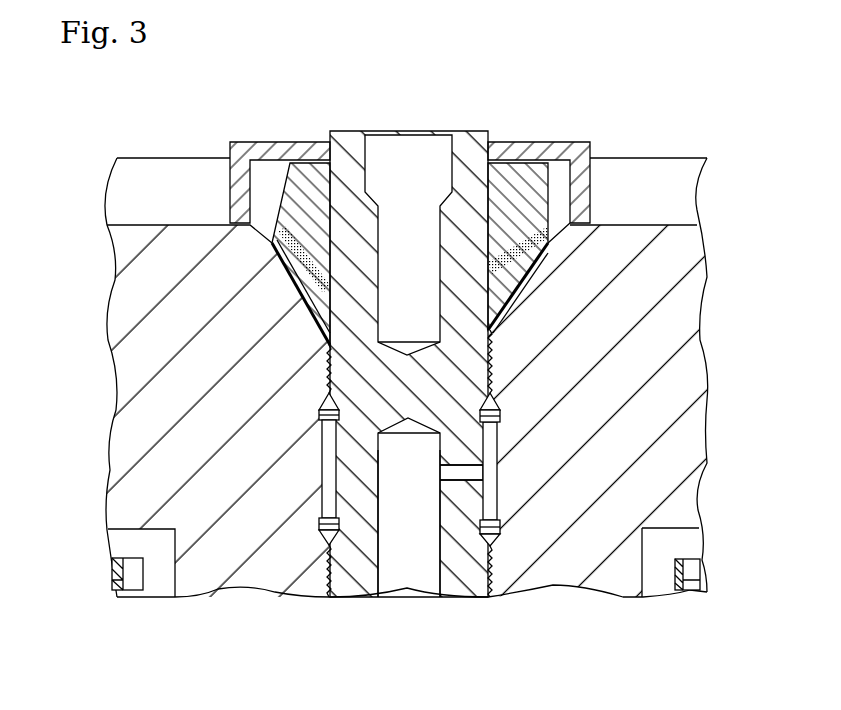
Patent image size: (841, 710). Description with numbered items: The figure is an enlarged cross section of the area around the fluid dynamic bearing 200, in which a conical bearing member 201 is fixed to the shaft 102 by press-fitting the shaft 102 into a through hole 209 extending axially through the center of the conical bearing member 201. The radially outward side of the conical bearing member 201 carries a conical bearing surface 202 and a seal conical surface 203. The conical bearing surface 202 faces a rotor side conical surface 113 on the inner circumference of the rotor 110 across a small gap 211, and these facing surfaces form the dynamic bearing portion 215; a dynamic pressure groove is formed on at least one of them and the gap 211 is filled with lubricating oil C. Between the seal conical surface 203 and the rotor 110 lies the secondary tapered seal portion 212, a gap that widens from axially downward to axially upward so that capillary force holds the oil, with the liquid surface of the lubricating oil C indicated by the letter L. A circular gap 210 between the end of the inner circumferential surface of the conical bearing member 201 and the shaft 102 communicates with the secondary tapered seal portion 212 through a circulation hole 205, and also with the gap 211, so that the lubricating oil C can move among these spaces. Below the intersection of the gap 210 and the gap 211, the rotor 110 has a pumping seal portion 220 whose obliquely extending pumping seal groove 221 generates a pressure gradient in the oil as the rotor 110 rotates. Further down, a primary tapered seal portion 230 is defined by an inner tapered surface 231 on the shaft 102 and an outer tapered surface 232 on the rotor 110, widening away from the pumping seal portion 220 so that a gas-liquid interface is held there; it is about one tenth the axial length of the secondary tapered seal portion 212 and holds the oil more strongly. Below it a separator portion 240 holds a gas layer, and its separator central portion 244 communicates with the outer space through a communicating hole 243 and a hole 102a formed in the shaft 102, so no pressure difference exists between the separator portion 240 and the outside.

The rotor 110 is at (138, 223).
The secondary tapered seal portion 212 is at (245, 200).
The seal conical surface 203 is at (543, 205).
The through hole 209 is at (477, 185).
The conical bearing member 201 is at (299, 182).
The conical bearing surface 202 is at (523, 265).
The circulation hole 205 is at (543, 253).
The rotor side conical surface 113 is at (520, 288).
The pumping seal groove 221 is at (493, 357).
The primary tapered seal portion 230 is at (543, 490).
The outer tapered surface 232 is at (497, 398).
The inner tapered surface 231 is at (497, 420).
The separator portion 240 is at (500, 450).
The separator central portion 244 is at (486, 470).
The communicating hole 243 is at (499, 490).
The pumping seal portion 220 is at (315, 389).
The fluid dynamic bearing 200 is at (281, 284).
The gap 210 is at (311, 302).
The gap 211 is at (302, 293).
The hole 102a is at (408, 578).
The shaft 102 is at (470, 575).
The dynamic bearing portion 215 is at (619, 630).
The lubricating oil C is at (271, 243).
The liquid surface L is at (273, 240).